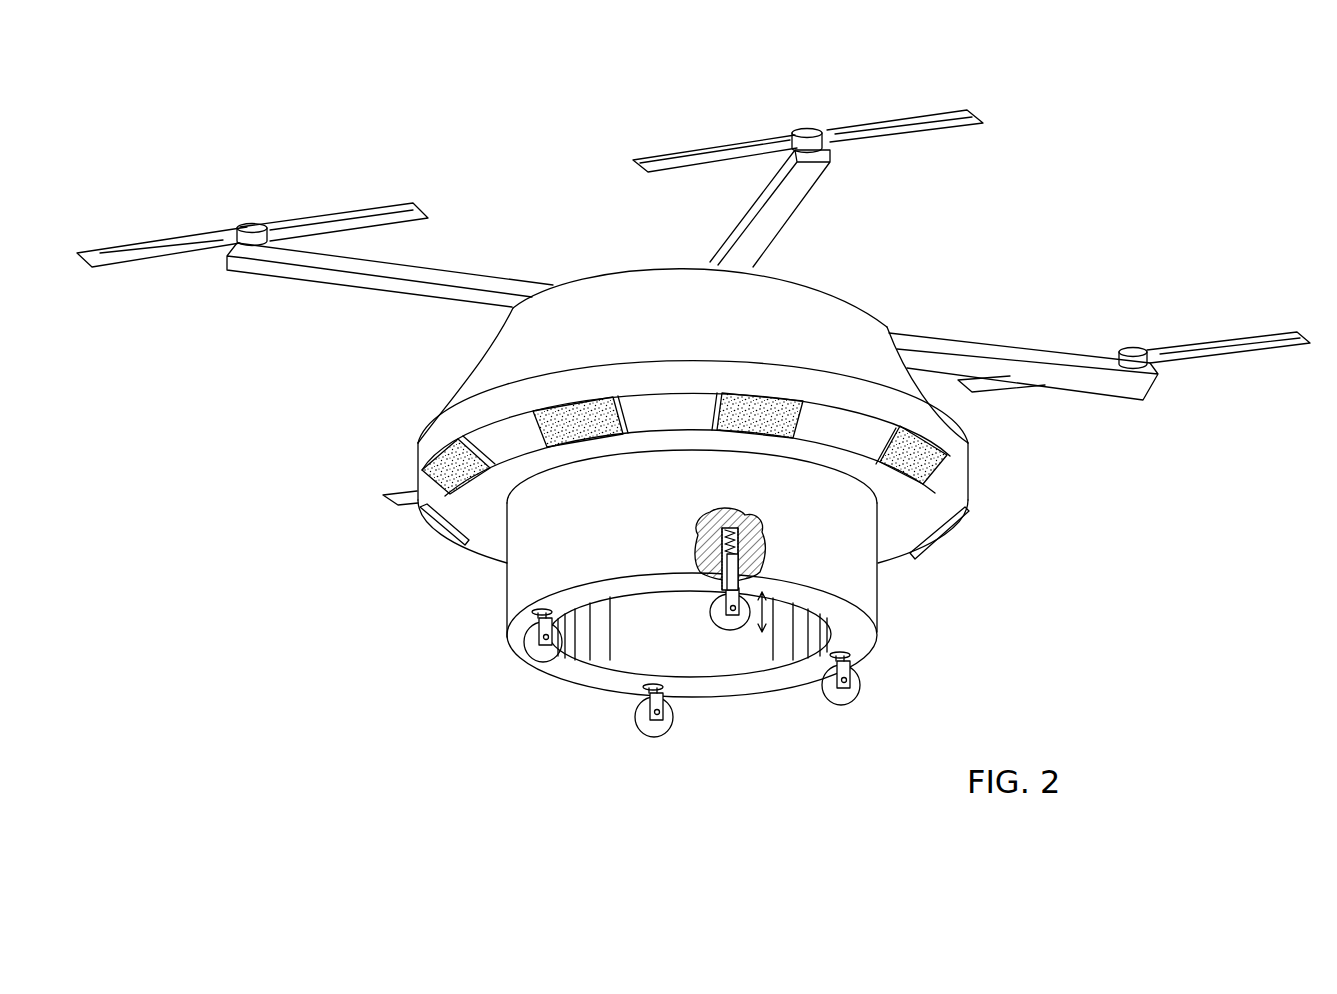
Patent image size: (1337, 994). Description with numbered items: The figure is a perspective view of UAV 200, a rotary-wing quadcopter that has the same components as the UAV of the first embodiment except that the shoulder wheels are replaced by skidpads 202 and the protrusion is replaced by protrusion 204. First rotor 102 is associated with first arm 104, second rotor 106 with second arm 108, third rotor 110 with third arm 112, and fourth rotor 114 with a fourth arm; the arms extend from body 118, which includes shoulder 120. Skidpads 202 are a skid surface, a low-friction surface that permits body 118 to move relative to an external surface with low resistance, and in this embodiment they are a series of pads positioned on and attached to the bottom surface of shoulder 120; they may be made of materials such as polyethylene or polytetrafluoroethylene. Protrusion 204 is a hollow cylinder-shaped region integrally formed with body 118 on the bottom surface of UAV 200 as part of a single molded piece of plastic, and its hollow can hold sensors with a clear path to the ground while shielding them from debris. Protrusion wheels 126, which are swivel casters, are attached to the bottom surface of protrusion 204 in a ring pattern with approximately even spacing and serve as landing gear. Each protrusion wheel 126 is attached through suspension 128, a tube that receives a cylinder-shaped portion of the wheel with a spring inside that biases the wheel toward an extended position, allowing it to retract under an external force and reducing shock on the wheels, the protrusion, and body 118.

The first rotor 102 is at (370, 217).
The first arm 104 is at (455, 275).
The second rotor 106 is at (892, 123).
The second arm 108 is at (785, 200).
The third rotor 110 is at (1220, 348).
The third arm 112 is at (1017, 355).
The fourth rotor 114 is at (397, 500).
The body 118 is at (838, 318).
The shoulder 120 is at (948, 483).
The protrusion wheels 126 is at (715, 622).
The suspension 128 is at (722, 545).
The UAV 200 is at (1178, 180).
The skidpads 202 is at (588, 410).
The protrusion 204 is at (725, 690).